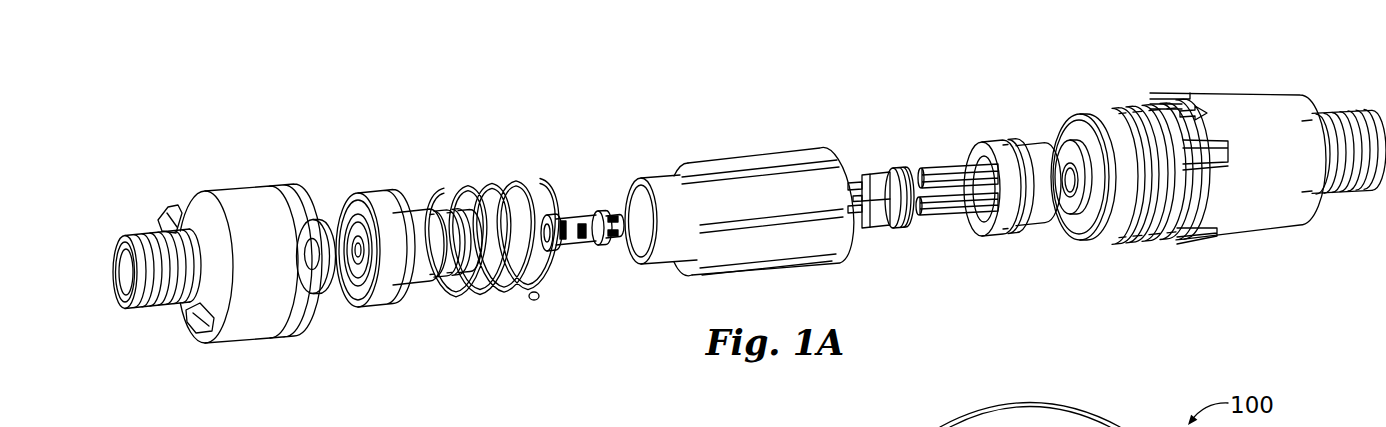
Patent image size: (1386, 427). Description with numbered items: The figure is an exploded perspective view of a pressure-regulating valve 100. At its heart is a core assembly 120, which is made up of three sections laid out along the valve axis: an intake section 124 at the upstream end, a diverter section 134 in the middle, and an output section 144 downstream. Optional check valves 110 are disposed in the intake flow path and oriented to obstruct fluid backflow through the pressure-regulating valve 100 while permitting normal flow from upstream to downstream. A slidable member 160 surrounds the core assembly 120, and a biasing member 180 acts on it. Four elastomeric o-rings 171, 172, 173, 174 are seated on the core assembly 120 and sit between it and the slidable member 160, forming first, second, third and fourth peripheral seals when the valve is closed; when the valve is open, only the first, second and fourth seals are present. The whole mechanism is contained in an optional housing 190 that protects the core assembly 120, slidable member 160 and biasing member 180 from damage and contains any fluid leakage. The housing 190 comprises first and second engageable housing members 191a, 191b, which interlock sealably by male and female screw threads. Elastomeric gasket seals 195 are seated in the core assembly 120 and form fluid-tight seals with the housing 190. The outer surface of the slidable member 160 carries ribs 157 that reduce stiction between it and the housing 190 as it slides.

The pressure-regulating valve 100 is at (310, 112).
The check valves 110 is at (592, 250).
The core assembly 120 is at (402, 223).
The intake section 124 is at (405, 296).
The diverter section 134 is at (878, 158).
The output section 144 is at (958, 158).
The ribs 157 is at (746, 172).
The slidable member 160 is at (775, 250).
The elastomeric o-ring 171 is at (429, 280).
The elastomeric o-ring 172 is at (465, 276).
The elastomeric o-ring 173 is at (902, 226).
The elastomeric o-ring 174 is at (1010, 232).
The biasing member 180 is at (500, 290).
The housing 190 is at (212, 186).
The first housing member 191a is at (245, 325).
The second housing member 191b is at (1249, 222).
The elastomeric gasket seals 195 is at (313, 288).